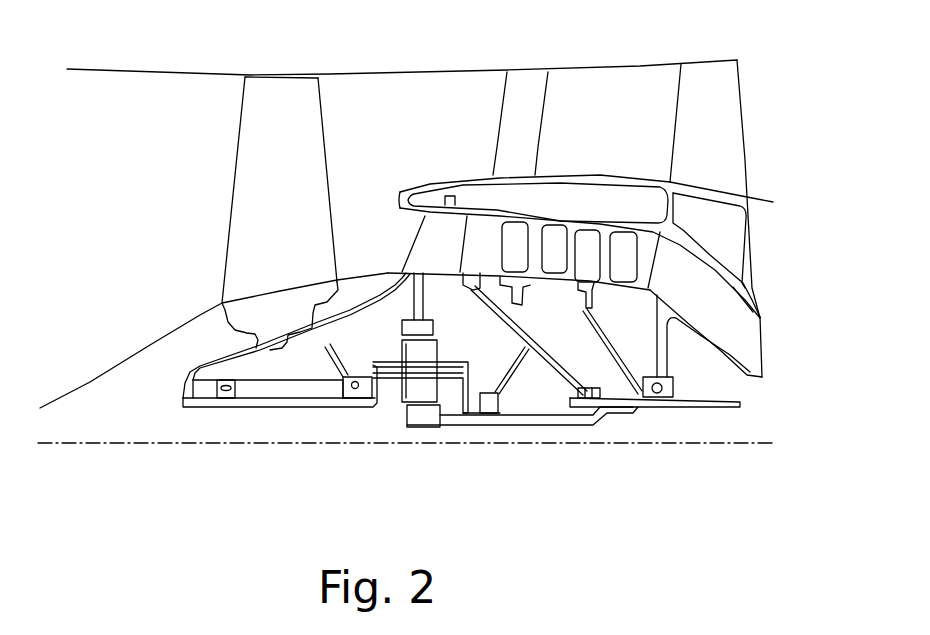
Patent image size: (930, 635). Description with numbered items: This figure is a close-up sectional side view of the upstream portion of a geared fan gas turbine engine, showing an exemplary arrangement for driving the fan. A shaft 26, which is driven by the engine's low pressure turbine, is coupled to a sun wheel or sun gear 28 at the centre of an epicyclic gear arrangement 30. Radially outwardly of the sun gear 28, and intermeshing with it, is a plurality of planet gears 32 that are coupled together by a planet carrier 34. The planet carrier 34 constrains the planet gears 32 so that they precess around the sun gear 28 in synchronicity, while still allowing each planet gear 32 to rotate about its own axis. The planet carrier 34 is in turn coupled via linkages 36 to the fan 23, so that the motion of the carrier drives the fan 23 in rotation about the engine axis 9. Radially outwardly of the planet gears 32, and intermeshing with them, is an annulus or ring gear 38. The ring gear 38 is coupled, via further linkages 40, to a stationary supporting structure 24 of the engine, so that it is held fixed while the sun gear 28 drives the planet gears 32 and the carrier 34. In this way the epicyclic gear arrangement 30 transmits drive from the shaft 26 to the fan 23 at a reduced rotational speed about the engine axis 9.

The engine axis 9 is at (212, 445).
The fan 23 is at (247, 193).
The stationary supporting structure 24 is at (427, 240).
The shaft 26 is at (557, 427).
The sun gear 28 is at (422, 415).
The epicyclic gear arrangement 30 is at (373, 420).
The planet gears 32 is at (393, 403).
The planet carrier 34 is at (460, 402).
The linkages 36 is at (374, 402).
The ring gear 38 is at (400, 337).
The linkages 40 is at (427, 310).